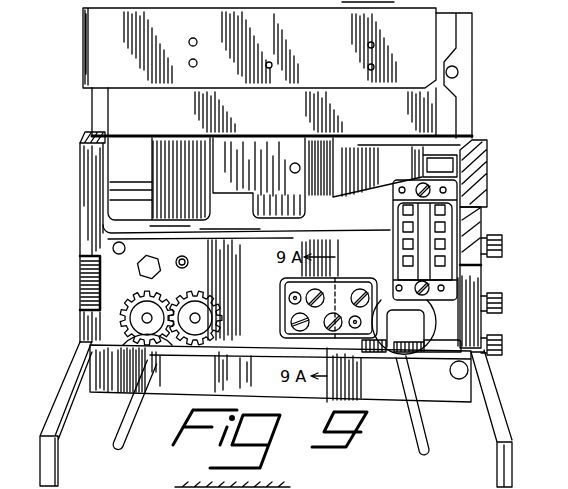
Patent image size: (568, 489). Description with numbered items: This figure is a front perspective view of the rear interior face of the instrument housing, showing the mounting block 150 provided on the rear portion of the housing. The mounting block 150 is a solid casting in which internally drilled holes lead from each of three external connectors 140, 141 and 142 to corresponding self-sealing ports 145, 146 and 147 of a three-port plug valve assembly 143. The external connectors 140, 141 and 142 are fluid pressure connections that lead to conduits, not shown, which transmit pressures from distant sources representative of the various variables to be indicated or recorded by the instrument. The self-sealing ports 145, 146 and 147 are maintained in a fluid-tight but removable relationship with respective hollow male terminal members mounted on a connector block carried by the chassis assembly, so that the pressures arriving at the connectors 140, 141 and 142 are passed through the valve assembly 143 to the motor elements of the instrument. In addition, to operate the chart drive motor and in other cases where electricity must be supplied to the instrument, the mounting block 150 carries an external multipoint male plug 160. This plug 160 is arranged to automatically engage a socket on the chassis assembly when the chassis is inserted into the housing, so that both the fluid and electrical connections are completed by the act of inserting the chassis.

The external connector 140 is at (501, 246).
The external connector 141 is at (503, 301).
The external connector 142 is at (503, 343).
The three-port plug valve assembly 143 is at (341, 290).
The self-sealing port 145 is at (314, 290).
The self-sealing port 146 is at (337, 328).
The self-sealing port 147 is at (362, 290).
The mounting block 150 is at (494, 157).
The external multipoint male plug 160 is at (433, 226).